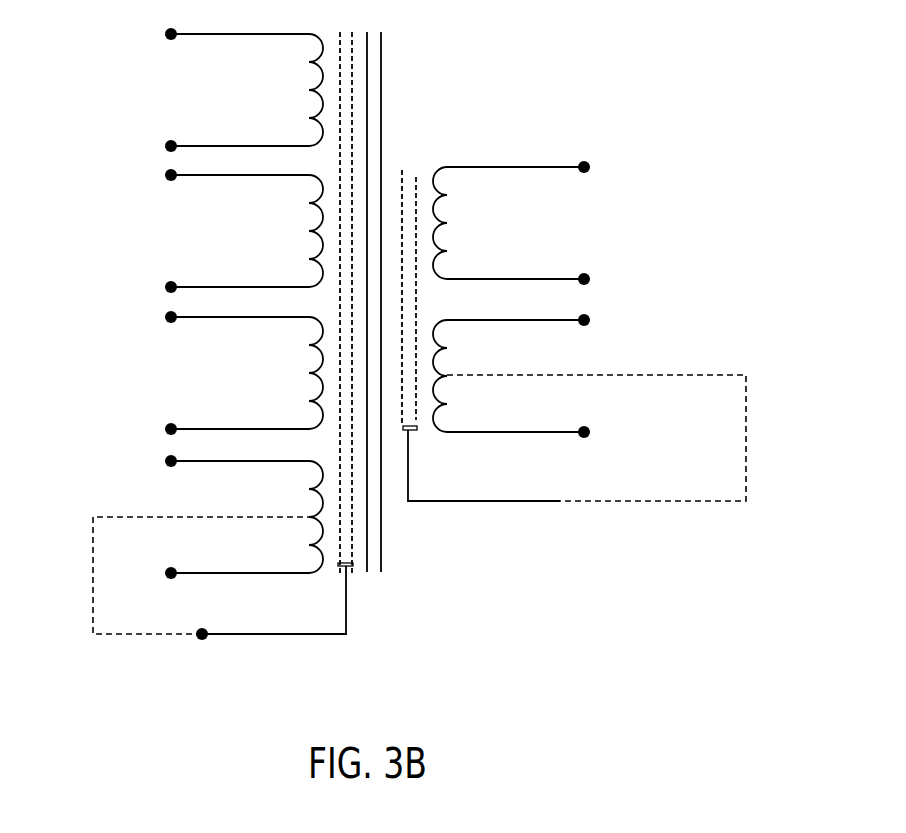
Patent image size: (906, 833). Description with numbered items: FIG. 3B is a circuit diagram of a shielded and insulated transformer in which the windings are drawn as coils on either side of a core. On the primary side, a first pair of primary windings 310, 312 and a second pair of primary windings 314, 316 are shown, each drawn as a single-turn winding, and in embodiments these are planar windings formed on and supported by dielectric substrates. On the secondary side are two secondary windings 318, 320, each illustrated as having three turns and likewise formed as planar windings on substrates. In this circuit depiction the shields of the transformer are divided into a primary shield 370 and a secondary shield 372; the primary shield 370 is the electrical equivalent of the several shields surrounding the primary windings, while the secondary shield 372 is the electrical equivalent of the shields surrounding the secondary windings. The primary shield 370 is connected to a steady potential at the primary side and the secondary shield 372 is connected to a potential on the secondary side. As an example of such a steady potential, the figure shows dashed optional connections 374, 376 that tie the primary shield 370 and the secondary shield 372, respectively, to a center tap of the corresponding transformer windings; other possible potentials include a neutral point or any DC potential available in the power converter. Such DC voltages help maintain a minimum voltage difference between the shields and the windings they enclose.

The primary winding 310 is at (197, 35).
The primary winding 312 is at (197, 176).
The primary winding 314 is at (196, 319).
The primary winding 316 is at (193, 462).
The secondary winding 318 is at (500, 168).
The secondary winding 320 is at (572, 319).
The primary shield 370 is at (272, 636).
The secondary shield 372 is at (475, 503).
The optional connection 374 is at (92, 577).
The optional connection 376 is at (747, 440).